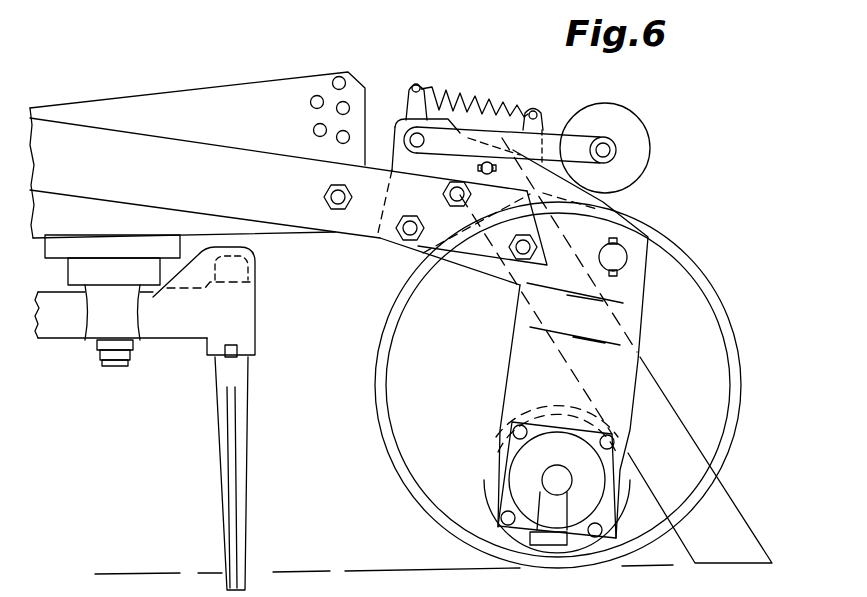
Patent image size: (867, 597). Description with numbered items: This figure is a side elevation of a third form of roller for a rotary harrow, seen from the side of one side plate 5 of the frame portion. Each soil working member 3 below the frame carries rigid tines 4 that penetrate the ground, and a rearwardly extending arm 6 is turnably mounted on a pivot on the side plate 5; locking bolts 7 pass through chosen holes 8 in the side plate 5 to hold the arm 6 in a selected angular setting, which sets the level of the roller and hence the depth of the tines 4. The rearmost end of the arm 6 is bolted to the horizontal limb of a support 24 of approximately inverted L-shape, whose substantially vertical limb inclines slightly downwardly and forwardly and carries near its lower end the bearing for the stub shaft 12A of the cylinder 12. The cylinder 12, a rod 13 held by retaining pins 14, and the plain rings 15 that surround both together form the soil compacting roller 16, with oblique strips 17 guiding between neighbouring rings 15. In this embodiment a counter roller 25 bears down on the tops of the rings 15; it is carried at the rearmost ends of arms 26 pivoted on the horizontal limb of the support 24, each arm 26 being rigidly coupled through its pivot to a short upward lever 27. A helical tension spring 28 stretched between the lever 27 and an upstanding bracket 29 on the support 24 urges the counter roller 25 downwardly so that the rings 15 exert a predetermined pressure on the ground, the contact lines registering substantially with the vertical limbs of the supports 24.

The soil working member 3 is at (186, 337).
The tine 4 is at (220, 437).
The side plate 5 is at (177, 100).
The arm 6 is at (363, 228).
The locking bolt 7 is at (327, 195).
The hole 8 is at (331, 85).
The cylinder 12 is at (497, 441).
The stub shaft 12A is at (571, 458).
The rod 13 is at (627, 262).
The retaining pin 14 is at (615, 238).
The plain ring 15 is at (373, 358).
The soil compacting roller 16 is at (697, 233).
The strip 17 is at (716, 496).
The support 24 is at (553, 281).
The counter roller 25 is at (622, 118).
The arm 26 is at (572, 150).
The lever 27 is at (404, 92).
The helical tension spring 28 is at (470, 92).
The bracket 29 is at (533, 112).